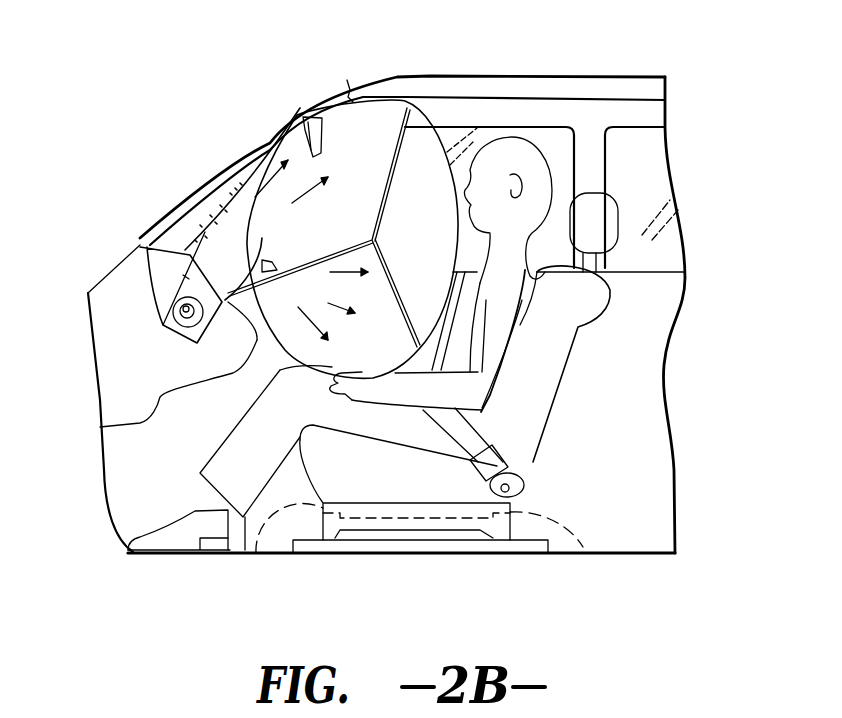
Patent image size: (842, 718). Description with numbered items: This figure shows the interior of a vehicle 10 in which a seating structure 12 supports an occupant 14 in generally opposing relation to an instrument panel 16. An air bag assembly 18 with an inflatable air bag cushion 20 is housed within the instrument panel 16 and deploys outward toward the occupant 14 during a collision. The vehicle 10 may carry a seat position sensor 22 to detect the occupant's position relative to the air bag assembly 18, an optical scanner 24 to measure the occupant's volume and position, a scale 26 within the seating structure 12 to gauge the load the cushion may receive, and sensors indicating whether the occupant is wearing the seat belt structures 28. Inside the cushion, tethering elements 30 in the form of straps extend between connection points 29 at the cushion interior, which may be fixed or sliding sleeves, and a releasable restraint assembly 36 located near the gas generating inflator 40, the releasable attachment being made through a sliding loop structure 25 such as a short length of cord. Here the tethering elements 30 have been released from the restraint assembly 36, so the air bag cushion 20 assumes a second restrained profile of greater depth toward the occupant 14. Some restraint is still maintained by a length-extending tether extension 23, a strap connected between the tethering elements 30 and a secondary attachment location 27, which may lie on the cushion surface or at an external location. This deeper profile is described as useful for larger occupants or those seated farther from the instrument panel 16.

The vehicle 10 is at (712, 72).
The seating structure 12 is at (570, 363).
The occupant 14 is at (510, 135).
The instrument panel 16 is at (113, 333).
The air bag assembly 18 is at (163, 343).
The air bag cushion 20 is at (283, 133).
The seat position sensor 22 is at (253, 558).
The tether extension 23 is at (242, 250).
The optical scanner 24 is at (347, 80).
The sliding loop structure 25 is at (262, 238).
The scale 26 is at (586, 552).
The secondary attachment location 27 is at (212, 405).
The seat belt structures 28 is at (475, 440).
The connection points 29 is at (407, 103).
The tethering elements 30 is at (362, 236).
The releasable restraint assembly 36 is at (176, 300).
The gas generating inflator 40 is at (165, 320).